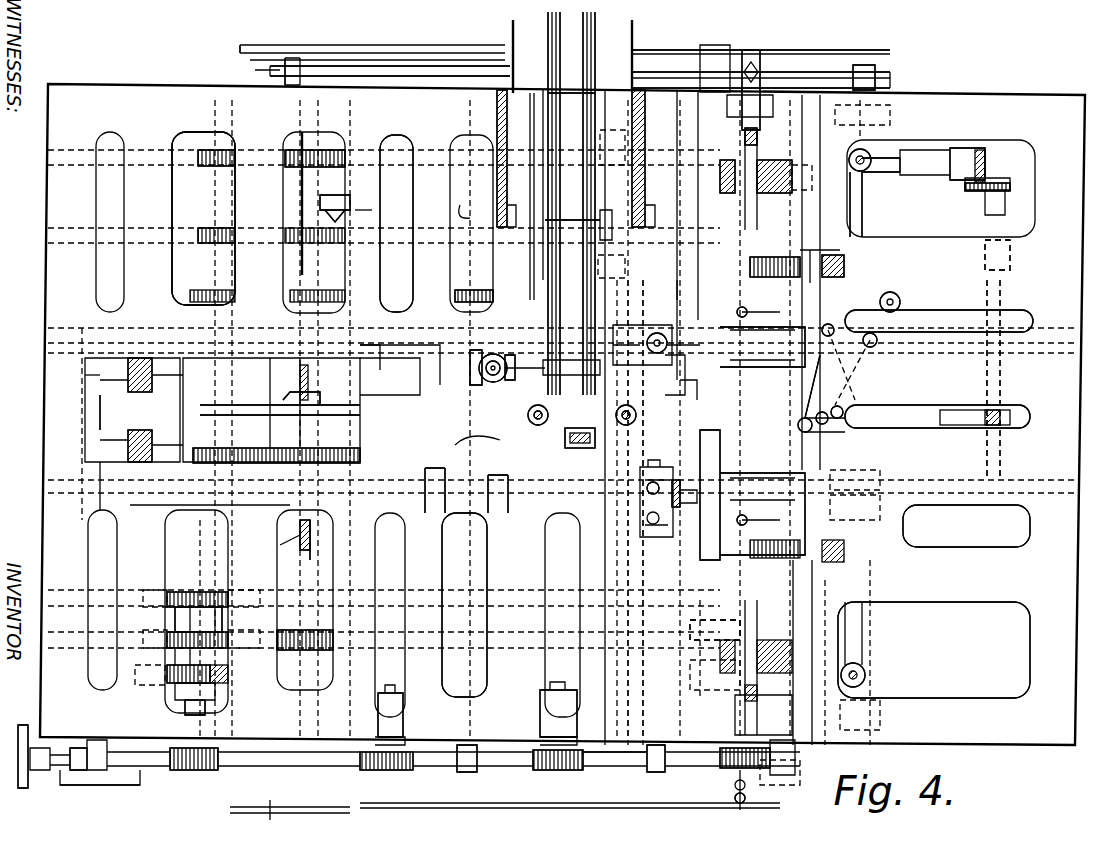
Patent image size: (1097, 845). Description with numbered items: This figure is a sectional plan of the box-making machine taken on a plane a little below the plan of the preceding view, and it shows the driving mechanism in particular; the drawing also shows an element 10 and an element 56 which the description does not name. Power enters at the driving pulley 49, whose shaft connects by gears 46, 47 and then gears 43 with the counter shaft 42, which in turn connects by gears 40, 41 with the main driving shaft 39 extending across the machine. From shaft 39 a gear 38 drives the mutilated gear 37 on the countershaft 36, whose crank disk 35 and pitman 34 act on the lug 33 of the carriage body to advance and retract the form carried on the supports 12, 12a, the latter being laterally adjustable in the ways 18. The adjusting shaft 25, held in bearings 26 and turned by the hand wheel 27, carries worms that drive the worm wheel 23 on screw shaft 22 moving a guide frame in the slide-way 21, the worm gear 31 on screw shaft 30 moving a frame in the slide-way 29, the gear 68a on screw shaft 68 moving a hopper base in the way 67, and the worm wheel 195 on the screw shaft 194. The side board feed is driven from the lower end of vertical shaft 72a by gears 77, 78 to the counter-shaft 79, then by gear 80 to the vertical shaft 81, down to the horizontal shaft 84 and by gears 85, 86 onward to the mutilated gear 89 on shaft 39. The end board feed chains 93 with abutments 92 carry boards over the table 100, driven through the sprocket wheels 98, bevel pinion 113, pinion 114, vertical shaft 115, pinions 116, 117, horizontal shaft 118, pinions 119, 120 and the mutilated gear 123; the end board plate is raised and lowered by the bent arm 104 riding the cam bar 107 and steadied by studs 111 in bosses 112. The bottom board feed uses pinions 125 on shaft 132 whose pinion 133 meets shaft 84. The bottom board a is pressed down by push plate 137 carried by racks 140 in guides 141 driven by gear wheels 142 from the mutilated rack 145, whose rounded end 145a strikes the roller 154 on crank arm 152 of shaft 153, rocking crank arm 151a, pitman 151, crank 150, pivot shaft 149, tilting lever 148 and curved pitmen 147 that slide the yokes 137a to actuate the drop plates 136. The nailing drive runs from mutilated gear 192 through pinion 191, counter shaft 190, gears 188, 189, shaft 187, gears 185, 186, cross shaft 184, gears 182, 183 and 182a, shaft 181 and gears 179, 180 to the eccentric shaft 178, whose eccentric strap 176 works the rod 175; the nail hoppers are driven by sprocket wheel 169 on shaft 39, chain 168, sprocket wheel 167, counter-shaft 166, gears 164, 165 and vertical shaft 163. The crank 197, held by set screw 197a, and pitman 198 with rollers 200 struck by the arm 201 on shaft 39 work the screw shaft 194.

The slot 10 is at (995, 500).
The support 12 is at (115, 445).
The support 12a is at (120, 375).
The ways 18 is at (95, 380).
The slide-way 21 is at (130, 505).
The screw shaft 22 is at (200, 693).
The worm wheel 23 is at (205, 772).
The shaft 25 is at (612, 770).
The bearings 26 is at (650, 775).
The hand wheel 27 is at (28, 775).
The slide-way 29 is at (425, 490).
The screw shaft 30 is at (395, 692).
The worm gear 31 is at (345, 790).
The lug 33 is at (100, 412).
The pitman 34 is at (280, 401).
The crank disk 35 is at (389, 377).
The countershaft 36 is at (435, 340).
The mutilated gear 37 is at (396, 223).
The gear 38 is at (225, 278).
The main driving shaft 39 is at (290, 795).
The gear 40 is at (167, 640).
The gear 41 is at (333, 635).
The counter shaft 42 is at (200, 612).
The gear 43 is at (167, 593).
The gear 46 is at (215, 678).
The gear 47 is at (140, 685).
The driving pulley 49 is at (145, 778).
The plate 56 is at (507, 178).
The way 67 is at (630, 720).
The screw shaft 68 is at (555, 697).
The gear 68a is at (550, 772).
The vertical shaft 72a is at (680, 480).
The gear 77 is at (608, 468).
The gear 78 is at (630, 512).
The counter-shaft 79 is at (690, 550).
The gear 80 is at (680, 528).
The vertical shaft 81 is at (640, 510).
The horizontal shaft 84 is at (464, 605).
The gear 85 is at (317, 535).
The gear 86 is at (322, 543).
The mutilated gear 89 is at (220, 448).
The abutments 92 is at (572, 100).
The feed chains 93 is at (548, 47).
The sprocket wheels 98 is at (505, 375).
The table 100 is at (572, 203).
The bent arm 104 is at (565, 445).
The cam bar 107 is at (475, 448).
The studs 111 is at (545, 375).
The bosses 112 is at (615, 415).
The bevel pinion 113 is at (512, 355).
The pinion 114 is at (490, 355).
The vertical shaft 115 is at (493, 382).
The pinion 116 is at (528, 415).
The pinion 117 is at (468, 375).
The horizontal shaft 118 is at (400, 362).
The pinion 119 is at (300, 368).
The pinion 120 is at (290, 388).
The mutilated gear 123 is at (211, 221).
The pinions 125 is at (112, 465).
The shaft 132 is at (882, 495).
The pinion 133 is at (850, 535).
The drop plate 136 is at (720, 470).
The push plate 137 is at (740, 310).
The yokes 137a is at (745, 520).
The rack 140 is at (845, 548).
The guide 141 is at (850, 575).
The gear wheel 142 is at (745, 525).
The mutilated rack 145 is at (160, 305).
The rounded end 145a is at (870, 300).
The curved pitmen 147 is at (805, 450).
The tilting lever 148 is at (798, 422).
The pivot shaft 149 is at (840, 432).
The crank 150 is at (860, 420).
The pitman 151 is at (862, 355).
The crank arm 151a is at (878, 342).
The crank arm 152 is at (865, 320).
The shaft 153 is at (790, 386).
The roller 154 is at (850, 520).
The vertical shaft 163 is at (858, 668).
The gear 164 is at (866, 675).
The gear 165 is at (868, 680).
The counter-shaft 166 is at (858, 620).
The sprocket wheel 167 is at (892, 77).
The chain 168 is at (810, 75).
The sprocket wheel 169 is at (270, 70).
The rod 175 is at (765, 650).
The eccentric strap 176 is at (755, 640).
The shaft 178 is at (675, 655).
The gear 179 is at (980, 190).
The gear 180 is at (980, 165).
The shaft 181 is at (930, 185).
The gear 182 is at (625, 645).
The gear 182a is at (715, 630).
The gear 183 is at (610, 673).
The cross shaft 184 is at (612, 240).
The gear 185 is at (612, 262).
The gear 186 is at (575, 222).
The shaft 187 is at (470, 201).
The gear 188 is at (365, 213).
The gear 189 is at (360, 188).
The counter shaft 190 is at (360, 160).
The pinion 191 is at (345, 145).
The mutilated gear 192 is at (220, 150).
The screw shaft 194 is at (760, 675).
The worm wheel 195 is at (765, 795).
The crank 197 is at (730, 808).
The set screw 197a is at (748, 802).
The pitman 198 is at (630, 808).
The rollers 200 is at (215, 815).
The arm 201 is at (290, 818).
The board a is at (746, 241).